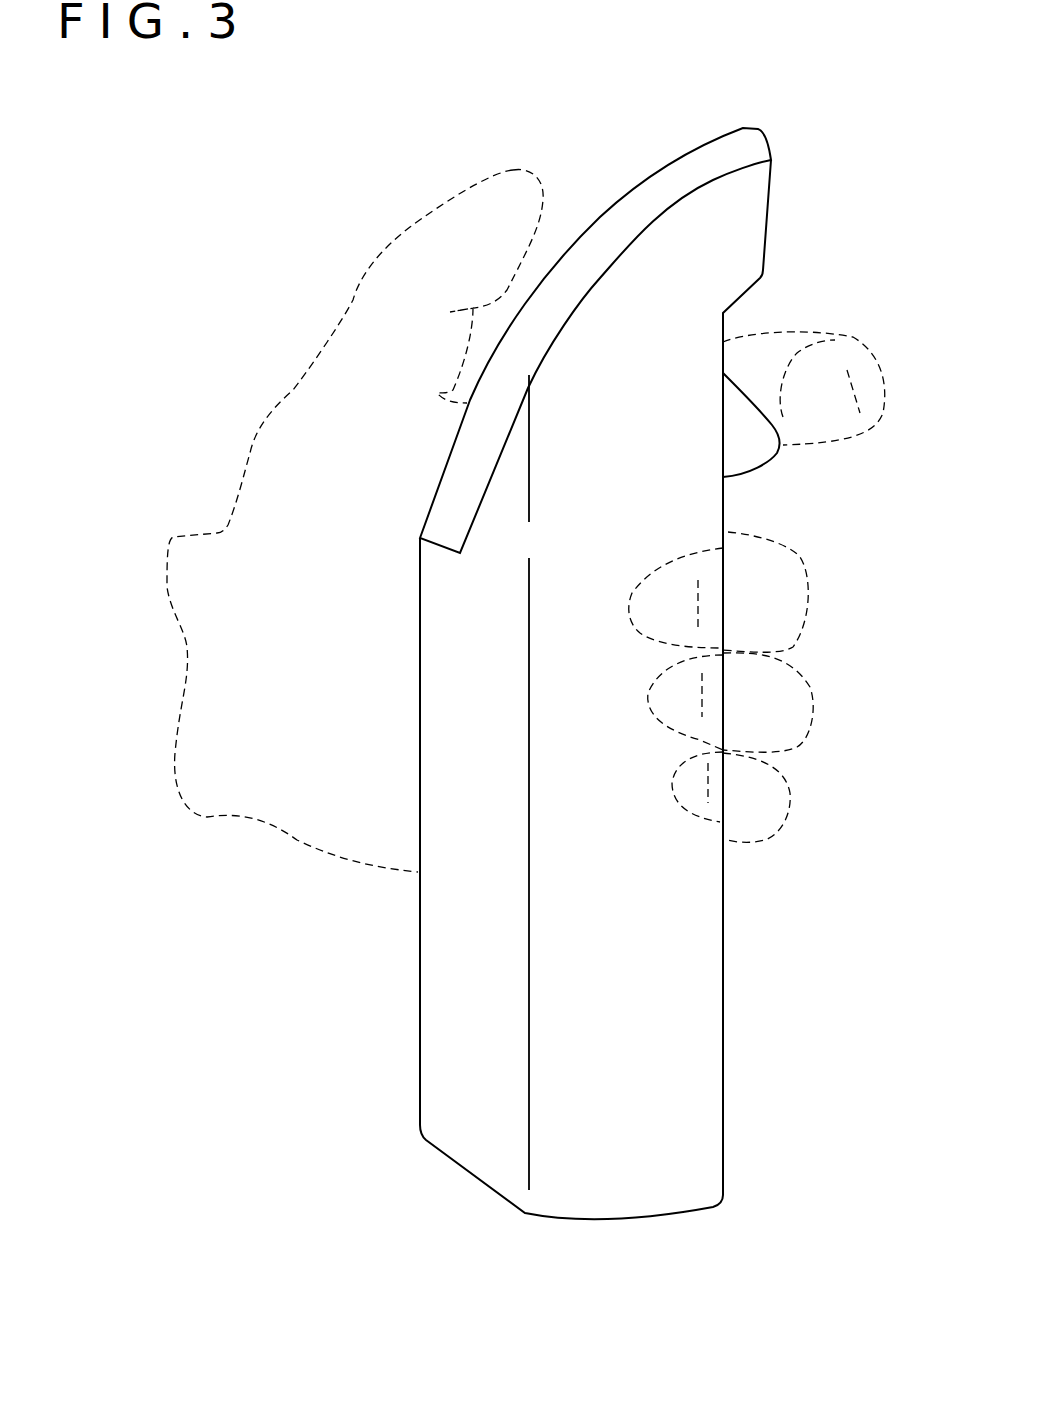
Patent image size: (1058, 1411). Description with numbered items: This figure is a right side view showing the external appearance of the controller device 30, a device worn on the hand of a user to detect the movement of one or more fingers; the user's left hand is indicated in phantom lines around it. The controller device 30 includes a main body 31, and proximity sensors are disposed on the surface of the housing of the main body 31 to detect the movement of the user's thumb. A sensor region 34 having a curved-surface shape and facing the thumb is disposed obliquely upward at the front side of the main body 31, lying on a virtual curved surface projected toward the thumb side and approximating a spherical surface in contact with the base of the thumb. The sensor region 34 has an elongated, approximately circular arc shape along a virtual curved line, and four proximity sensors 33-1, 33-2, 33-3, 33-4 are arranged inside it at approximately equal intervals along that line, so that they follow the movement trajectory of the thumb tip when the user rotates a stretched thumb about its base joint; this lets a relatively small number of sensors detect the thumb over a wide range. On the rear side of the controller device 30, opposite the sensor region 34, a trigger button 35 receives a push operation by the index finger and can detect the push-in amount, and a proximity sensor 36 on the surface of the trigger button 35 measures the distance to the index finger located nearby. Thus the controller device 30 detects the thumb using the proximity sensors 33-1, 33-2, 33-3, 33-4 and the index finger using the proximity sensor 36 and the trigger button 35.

The controller device 30 is at (590, 1230).
The main body 31 is at (713, 1069).
The proximity sensor 33-1 is at (686, 146).
The proximity sensor 33-2 is at (565, 250).
The proximity sensor 33-3 is at (487, 357).
The proximity sensor 33-4 is at (432, 491).
The sensor region 34 is at (526, 298).
The trigger button 35 is at (753, 448).
The proximity sensor 36 is at (756, 405).